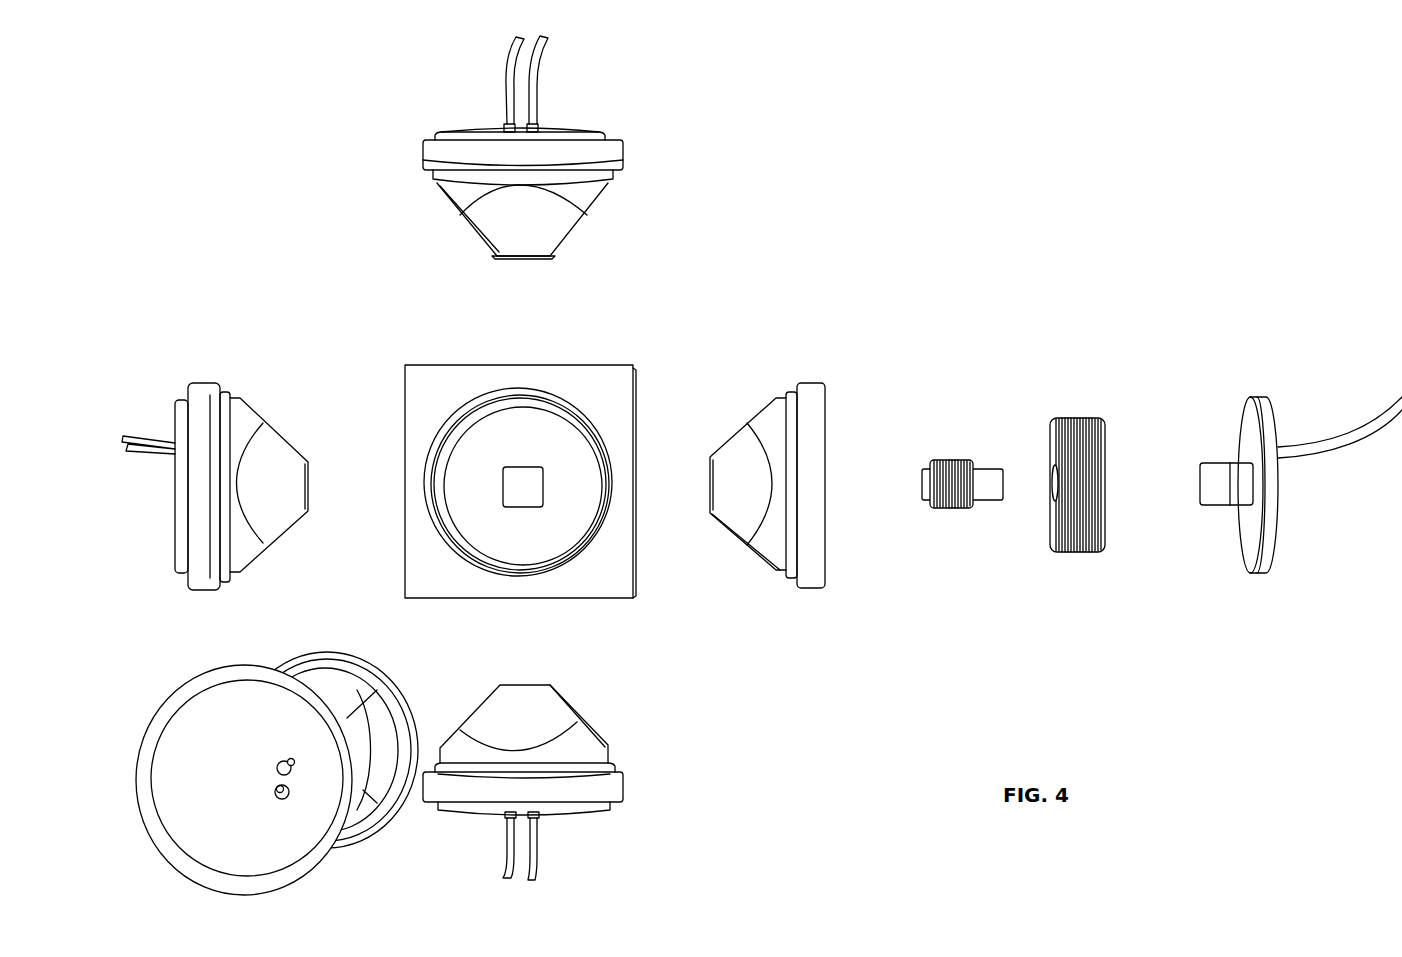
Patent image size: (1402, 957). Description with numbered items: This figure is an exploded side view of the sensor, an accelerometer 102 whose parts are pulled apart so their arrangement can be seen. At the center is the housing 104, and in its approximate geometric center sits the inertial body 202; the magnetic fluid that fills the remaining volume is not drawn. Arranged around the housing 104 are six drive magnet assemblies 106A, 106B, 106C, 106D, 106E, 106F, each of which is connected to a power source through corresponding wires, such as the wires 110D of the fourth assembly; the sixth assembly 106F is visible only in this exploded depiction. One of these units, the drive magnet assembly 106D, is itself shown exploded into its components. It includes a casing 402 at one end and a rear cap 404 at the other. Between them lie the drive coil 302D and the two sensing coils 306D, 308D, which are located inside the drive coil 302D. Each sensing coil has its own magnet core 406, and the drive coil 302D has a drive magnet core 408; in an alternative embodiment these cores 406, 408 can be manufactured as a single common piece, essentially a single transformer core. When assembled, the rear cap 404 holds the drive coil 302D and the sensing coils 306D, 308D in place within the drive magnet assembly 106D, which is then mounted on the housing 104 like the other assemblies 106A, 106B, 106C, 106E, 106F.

The accelerometer 102 is at (207, 140).
The housing 104 is at (595, 363).
The inertial body 202 is at (505, 462).
The drive magnet assembly 106A is at (623, 155).
The drive magnet assembly 106B is at (203, 383).
The drive magnet assembly 106C is at (183, 780).
The drive magnet assembly 106D is at (1305, 593).
The drive magnet assembly 106E is at (625, 778).
The drive magnet assembly 106F is at (332, 650).
The casing 402 is at (808, 383).
The rear cap 404 is at (1265, 396).
The magnet cores 406 is at (994, 498).
The drive magnet core 408 is at (1205, 463).
The drive coil 302D is at (1073, 418).
The sensing coil 306D is at (966, 477).
The sensing coil 308D is at (948, 460).
The wires 110D is at (1350, 452).